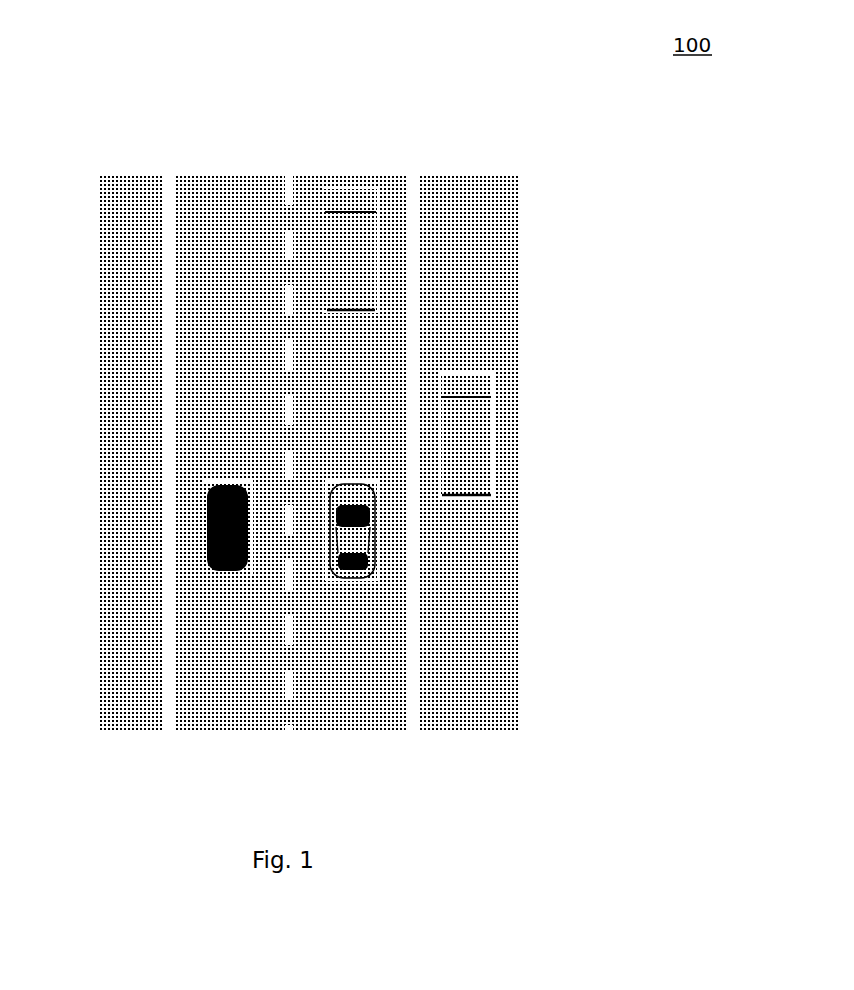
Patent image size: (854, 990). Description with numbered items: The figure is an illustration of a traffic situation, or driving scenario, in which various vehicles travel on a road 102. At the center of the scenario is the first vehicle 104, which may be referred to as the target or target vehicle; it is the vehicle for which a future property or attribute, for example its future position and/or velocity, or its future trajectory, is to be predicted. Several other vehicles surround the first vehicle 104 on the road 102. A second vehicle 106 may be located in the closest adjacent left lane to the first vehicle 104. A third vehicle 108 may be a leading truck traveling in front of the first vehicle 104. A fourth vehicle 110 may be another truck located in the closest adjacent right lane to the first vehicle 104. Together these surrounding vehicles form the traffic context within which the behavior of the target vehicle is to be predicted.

The road 102 is at (506, 228).
The first vehicle 104 is at (345, 540).
The second vehicle 106 is at (207, 533).
The third vehicle 108 is at (355, 198).
The fourth vehicle 110 is at (483, 437).